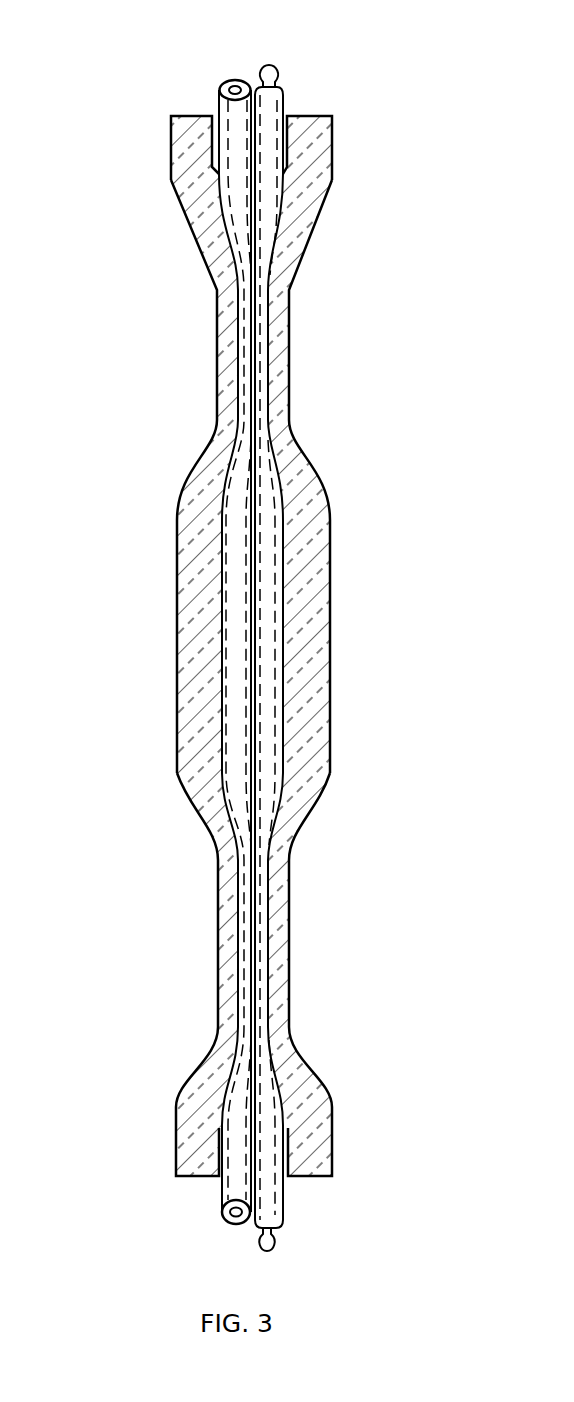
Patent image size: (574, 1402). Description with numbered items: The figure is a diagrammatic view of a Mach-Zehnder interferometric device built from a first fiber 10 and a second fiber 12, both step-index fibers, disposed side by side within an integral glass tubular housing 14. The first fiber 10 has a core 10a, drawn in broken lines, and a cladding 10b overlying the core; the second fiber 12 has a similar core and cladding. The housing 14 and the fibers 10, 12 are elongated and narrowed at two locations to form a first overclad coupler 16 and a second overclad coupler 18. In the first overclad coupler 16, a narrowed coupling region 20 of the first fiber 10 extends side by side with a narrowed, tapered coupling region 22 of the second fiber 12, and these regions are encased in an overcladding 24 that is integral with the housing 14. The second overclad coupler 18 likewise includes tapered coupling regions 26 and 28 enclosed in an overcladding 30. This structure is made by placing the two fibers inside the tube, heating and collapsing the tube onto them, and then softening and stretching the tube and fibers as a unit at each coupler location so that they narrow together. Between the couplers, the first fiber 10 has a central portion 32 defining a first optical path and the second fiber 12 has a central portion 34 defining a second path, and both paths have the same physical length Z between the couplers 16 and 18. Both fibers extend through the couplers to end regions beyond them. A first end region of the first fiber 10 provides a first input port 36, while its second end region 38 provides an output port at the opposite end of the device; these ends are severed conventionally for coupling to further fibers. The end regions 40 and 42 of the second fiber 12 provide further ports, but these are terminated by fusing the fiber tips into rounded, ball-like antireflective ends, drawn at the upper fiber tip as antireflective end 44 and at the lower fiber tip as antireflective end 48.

The first fiber 10 is at (214, 574).
The core 10a is at (152, 1146).
The cladding 10b is at (157, 1108).
The second fiber 12 is at (291, 573).
The tubular housing 14 is at (202, 646).
The first overclad coupler 16 is at (166, 940).
The second overclad coupler 18 is at (165, 350).
The narrowed coupling region 20 is at (182, 949).
The tapered coupling region 22 is at (301, 949).
The overcladding 24 is at (322, 940).
The tapered coupling region 26 is at (182, 347).
The tapered coupling region 28 is at (315, 347).
The overcladding 30 is at (323, 350).
The central portion 32 is at (172, 650).
The central portion 34 is at (330, 657).
The first input port 36 is at (193, 1177).
The second end region 38 is at (193, 100).
The end region 40 is at (304, 1176).
The end region 42 is at (305, 109).
The upper optical fiber end 44 is at (292, 43).
The lower optical fiber end 48 is at (300, 1241).
The physical length Z is at (330, 482).